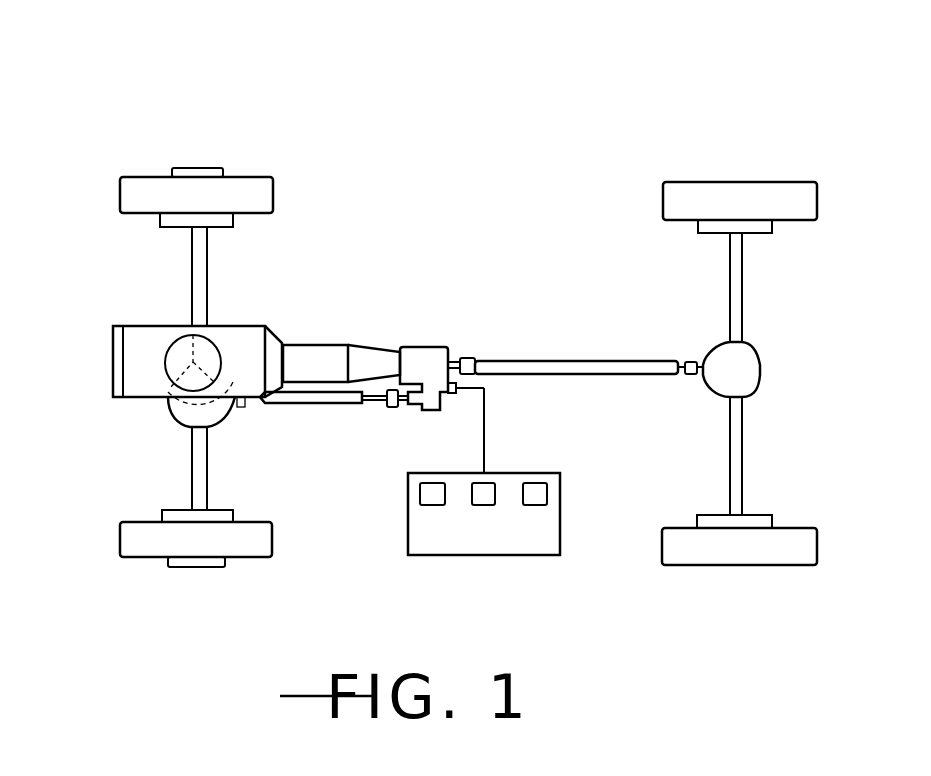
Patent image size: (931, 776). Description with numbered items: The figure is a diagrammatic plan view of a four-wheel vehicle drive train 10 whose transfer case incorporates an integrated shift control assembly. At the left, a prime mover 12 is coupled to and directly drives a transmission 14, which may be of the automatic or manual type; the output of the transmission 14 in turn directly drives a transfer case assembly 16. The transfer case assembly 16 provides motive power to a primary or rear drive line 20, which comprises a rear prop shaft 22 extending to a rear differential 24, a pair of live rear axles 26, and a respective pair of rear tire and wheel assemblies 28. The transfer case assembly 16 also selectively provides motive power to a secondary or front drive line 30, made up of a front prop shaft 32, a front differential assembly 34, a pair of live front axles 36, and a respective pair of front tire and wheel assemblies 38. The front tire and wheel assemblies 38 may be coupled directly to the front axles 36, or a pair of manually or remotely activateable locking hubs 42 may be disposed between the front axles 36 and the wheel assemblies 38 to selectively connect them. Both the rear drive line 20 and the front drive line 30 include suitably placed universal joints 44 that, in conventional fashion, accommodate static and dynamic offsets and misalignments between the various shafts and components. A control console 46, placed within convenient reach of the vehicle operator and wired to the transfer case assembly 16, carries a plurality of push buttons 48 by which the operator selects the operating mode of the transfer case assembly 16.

The four-wheel vehicle drive train 10 is at (437, 98).
The prime mover 12 is at (132, 355).
The transmission 14 is at (308, 355).
The transfer case assembly 16 is at (415, 345).
The primary or rear drive line 20 is at (580, 235).
The primary or rear prop shaft 22 is at (573, 358).
The primary or rear differential 24 is at (748, 373).
The primary or rear axles 26 is at (742, 290).
The primary or rear tire and wheel assemblies 28 is at (730, 165).
The secondary or front drive line 30 is at (65, 455).
The secondary or front prop shaft 32 is at (315, 405).
The secondary or front differential assembly 34 is at (185, 410).
The secondary or front axles 36 is at (190, 265).
The secondary or front tire and wheel assemblies 38 is at (112, 165).
The locking hubs 42 is at (200, 170).
The universal joints 44 is at (470, 356).
The control console 46 is at (490, 557).
The push buttons 48 is at (483, 478).